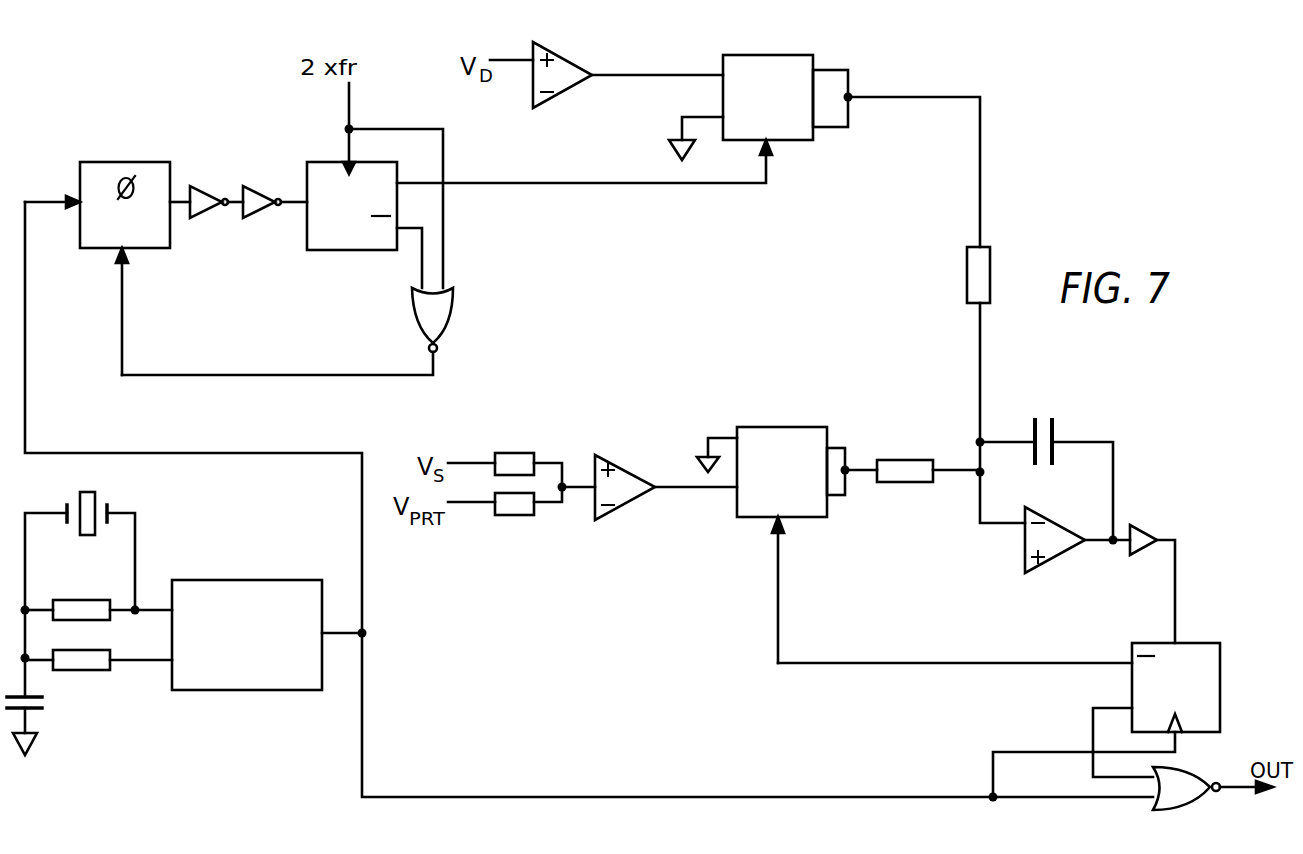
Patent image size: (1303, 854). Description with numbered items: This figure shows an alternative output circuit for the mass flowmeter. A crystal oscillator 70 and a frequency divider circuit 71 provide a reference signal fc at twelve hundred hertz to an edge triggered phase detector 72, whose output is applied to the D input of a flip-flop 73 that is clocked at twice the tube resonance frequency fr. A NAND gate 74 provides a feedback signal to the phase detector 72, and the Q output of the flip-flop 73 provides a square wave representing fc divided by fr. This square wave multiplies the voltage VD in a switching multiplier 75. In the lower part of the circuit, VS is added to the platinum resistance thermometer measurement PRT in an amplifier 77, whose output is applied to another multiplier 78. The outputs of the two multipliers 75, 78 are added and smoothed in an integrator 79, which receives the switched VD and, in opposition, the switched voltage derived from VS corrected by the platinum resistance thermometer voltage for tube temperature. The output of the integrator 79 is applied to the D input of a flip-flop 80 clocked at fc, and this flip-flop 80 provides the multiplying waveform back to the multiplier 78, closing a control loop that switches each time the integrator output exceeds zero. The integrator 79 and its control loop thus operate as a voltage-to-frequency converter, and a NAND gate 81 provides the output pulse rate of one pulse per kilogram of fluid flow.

The crystal oscillator 70 is at (89, 623).
The frequency divider circuit 71 is at (283, 578).
The edge triggered phase detector 72 is at (167, 250).
The flip-flop 73 is at (315, 250).
The NAND gate 74 is at (455, 308).
The switching multiplier 75 is at (810, 142).
The amplifier 77 is at (633, 502).
The multiplier 78 is at (733, 498).
The integrator 79 is at (1091, 496).
The flip-flop 80 is at (1133, 643).
The NAND gate 81 is at (1195, 767).